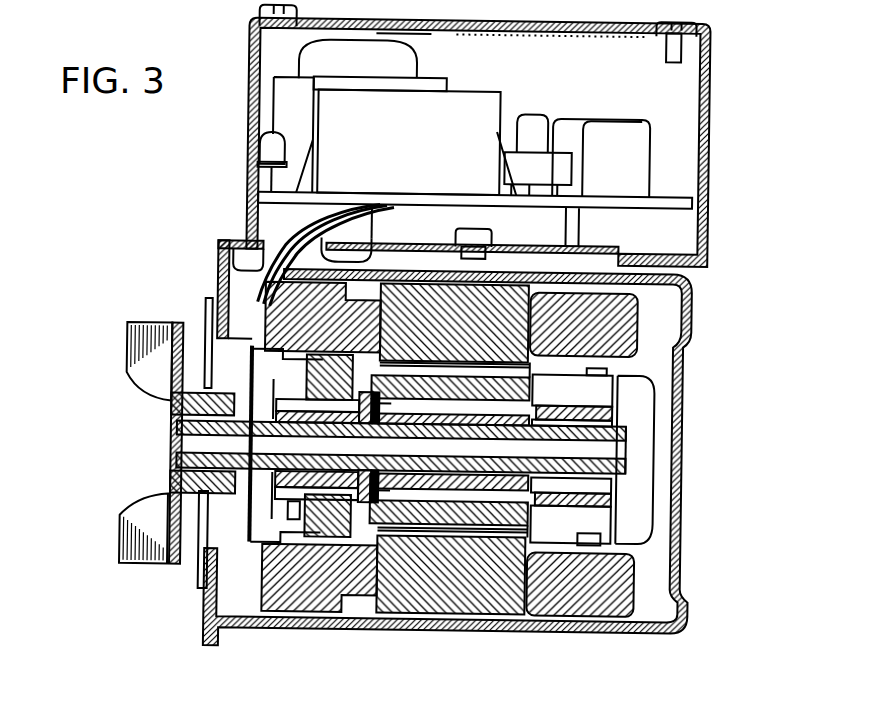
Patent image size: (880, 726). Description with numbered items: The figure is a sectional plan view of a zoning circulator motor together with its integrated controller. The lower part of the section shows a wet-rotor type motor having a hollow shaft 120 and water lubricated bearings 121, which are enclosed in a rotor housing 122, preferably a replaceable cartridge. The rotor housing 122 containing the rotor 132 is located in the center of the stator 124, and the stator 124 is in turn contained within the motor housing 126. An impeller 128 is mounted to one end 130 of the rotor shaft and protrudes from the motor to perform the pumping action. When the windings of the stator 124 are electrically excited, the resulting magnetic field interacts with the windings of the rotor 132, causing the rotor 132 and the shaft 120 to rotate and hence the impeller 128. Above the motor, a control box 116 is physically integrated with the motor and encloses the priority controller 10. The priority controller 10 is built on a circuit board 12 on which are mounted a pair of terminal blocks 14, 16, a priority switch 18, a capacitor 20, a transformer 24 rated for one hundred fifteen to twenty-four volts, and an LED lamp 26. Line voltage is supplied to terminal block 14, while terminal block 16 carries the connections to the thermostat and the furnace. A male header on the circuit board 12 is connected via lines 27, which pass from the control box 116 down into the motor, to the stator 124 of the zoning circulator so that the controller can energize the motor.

The priority controller 10 is at (446, 348).
The circuit board 12 is at (630, 203).
The terminal block 14 is at (567, 121).
The terminal block 16 is at (644, 154).
The priority switch 18 is at (527, 144).
The capacitor 20 is at (467, 101).
The transformer 24 is at (400, 63).
The LED lamp 26 is at (262, 139).
The lines 27 is at (260, 212).
The control box 116 is at (707, 72).
The hollow shaft 120 is at (628, 446).
The water lubricated bearings 121 is at (618, 421).
The rotor housing 122 is at (639, 504).
The stator 124 is at (531, 609).
The motor housing 126 is at (677, 622).
The impeller 128 is at (126, 548).
The end of the rotor shaft 130 is at (183, 454).
The rotor 132 is at (362, 518).